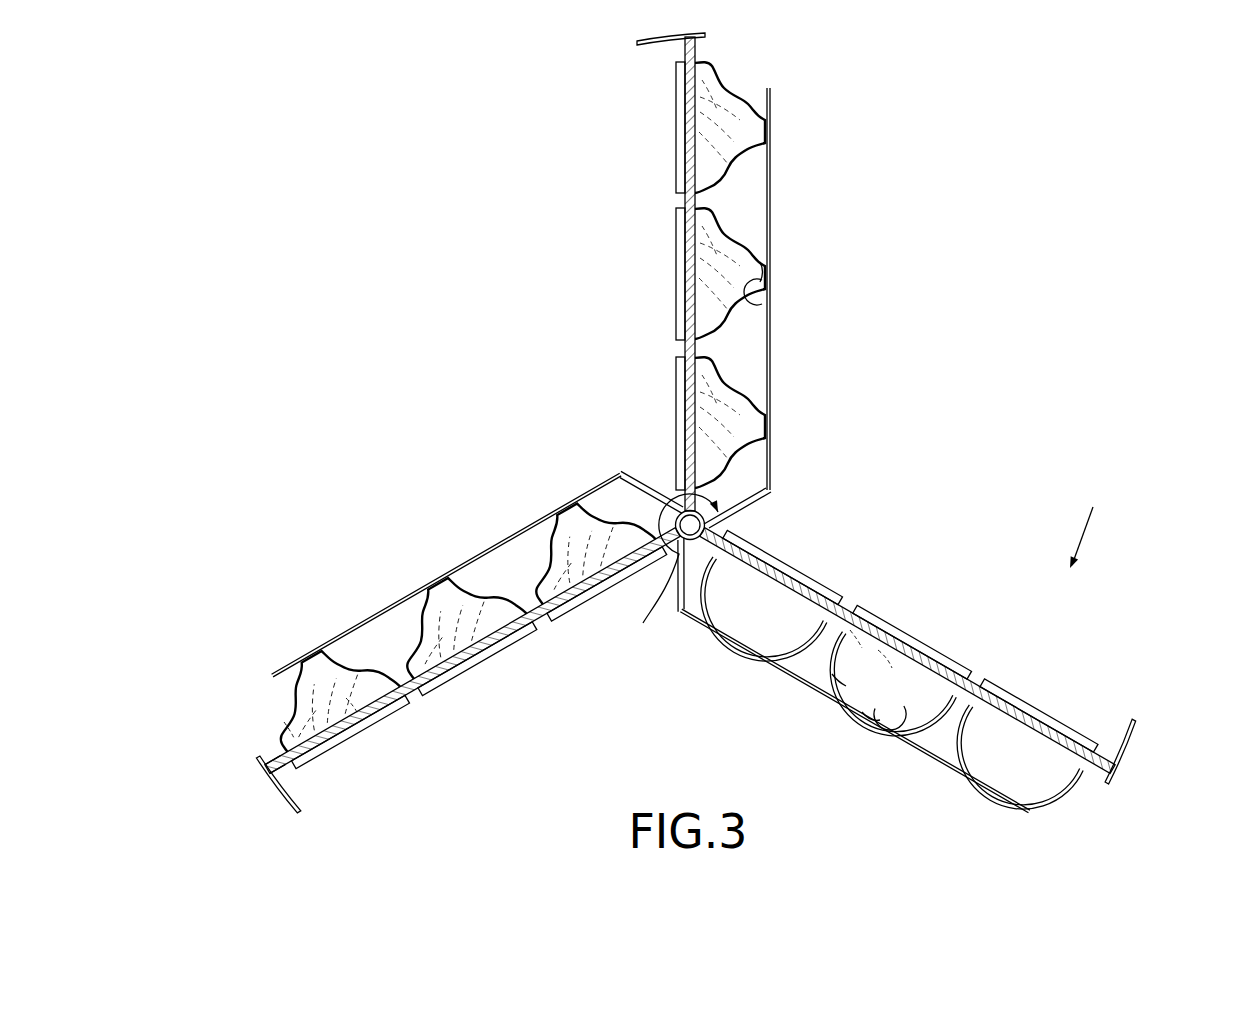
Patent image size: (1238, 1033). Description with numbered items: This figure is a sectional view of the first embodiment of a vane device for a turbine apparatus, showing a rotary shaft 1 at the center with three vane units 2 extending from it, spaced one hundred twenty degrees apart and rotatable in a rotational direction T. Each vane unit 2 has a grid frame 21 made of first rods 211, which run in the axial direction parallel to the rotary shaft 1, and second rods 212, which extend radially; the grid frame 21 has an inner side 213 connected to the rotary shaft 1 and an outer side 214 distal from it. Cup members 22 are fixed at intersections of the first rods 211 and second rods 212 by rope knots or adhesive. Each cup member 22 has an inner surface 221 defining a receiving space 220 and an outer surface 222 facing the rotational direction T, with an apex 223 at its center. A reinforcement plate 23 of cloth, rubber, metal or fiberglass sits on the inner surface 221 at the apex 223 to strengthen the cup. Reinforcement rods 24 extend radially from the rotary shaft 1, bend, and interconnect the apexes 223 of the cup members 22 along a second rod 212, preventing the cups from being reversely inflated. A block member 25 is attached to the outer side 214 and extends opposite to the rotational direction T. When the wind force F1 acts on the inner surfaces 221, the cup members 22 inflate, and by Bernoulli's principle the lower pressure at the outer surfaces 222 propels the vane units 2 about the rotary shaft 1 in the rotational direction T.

The rotary shaft 1 is at (708, 520).
The vane unit 2 is at (683, 431).
The grid frame 21 is at (680, 210).
The first rod 211 is at (686, 130).
The second rod 212 is at (688, 78).
The inner side 213 is at (668, 498).
The outer side 214 is at (266, 738).
The cup member 22 is at (736, 225).
The receiving space 220 is at (883, 658).
The inner surface 221 is at (857, 638).
The outer surface 222 is at (837, 680).
The apex 223 is at (765, 273).
The reinforcement plate 23 is at (750, 290).
The reinforcement rod 24 is at (768, 155).
The block member 25 is at (1135, 745).
The wind force F1 is at (1091, 521).
The rotational direction T is at (671, 567).